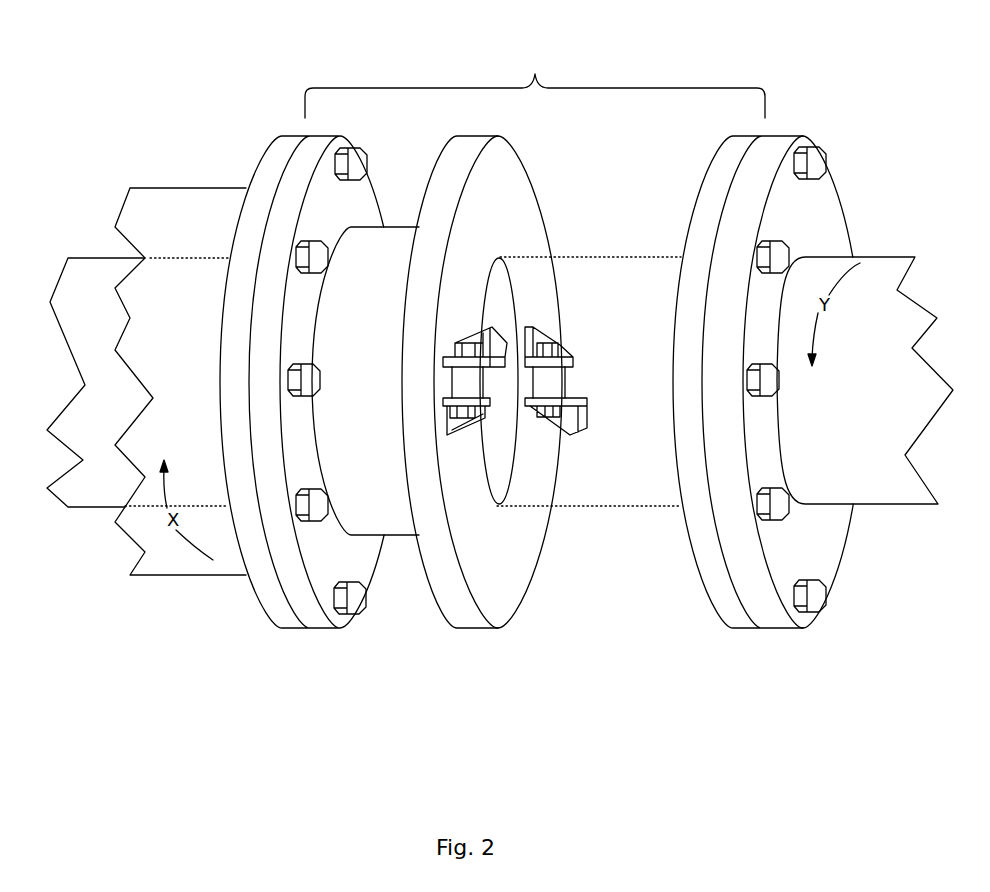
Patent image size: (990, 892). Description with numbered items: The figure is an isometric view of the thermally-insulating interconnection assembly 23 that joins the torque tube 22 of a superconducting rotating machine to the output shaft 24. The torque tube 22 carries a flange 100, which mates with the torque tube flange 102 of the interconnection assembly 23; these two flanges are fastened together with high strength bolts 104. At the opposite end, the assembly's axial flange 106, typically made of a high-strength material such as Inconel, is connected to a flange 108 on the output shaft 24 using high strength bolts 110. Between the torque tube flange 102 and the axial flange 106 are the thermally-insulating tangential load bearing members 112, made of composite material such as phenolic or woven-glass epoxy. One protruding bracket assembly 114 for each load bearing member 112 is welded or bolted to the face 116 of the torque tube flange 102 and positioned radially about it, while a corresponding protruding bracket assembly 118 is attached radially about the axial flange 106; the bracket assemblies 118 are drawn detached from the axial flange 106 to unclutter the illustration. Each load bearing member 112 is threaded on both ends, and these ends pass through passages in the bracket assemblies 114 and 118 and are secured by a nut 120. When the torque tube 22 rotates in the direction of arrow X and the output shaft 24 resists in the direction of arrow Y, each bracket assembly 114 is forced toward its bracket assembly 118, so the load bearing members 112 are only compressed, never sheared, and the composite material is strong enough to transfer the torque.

The torque tube 22 is at (185, 203).
The thermally-insulating interconnection assembly 23 is at (535, 83).
The output shaft 24 is at (103, 483).
The flange 100 is at (308, 374).
The torque tube flange 102 is at (395, 490).
The high strength bolts 104 is at (356, 604).
The axial flange 106 is at (730, 613).
The flange 108 is at (765, 613).
The high strength bolts 110 is at (817, 608).
The thermally-insulating tangential load bearing members 112 is at (469, 384).
The protruding bracket assemblies 114 is at (467, 412).
The face 116 is at (495, 567).
The protruding bracket assemblies 118 is at (495, 348).
The nut 120 is at (470, 416).